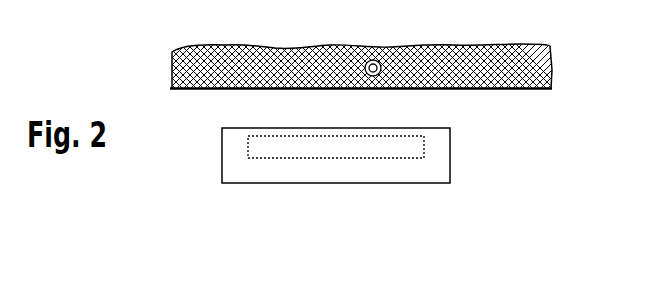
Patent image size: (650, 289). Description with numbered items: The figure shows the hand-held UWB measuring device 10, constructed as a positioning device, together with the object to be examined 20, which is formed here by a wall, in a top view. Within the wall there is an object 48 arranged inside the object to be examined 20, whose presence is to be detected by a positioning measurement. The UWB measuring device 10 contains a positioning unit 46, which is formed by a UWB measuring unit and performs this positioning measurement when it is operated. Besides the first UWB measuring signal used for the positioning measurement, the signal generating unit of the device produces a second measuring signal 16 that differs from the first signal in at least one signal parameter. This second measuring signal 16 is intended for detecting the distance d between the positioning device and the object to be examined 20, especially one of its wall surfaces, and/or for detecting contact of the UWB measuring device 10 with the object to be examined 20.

The UWB measuring device 10 is at (243, 185).
The second measuring signal 16 is at (317, 92).
The object to be examined 20 is at (552, 78).
The positioning unit 46 is at (391, 158).
The object 48 is at (373, 60).
The distance d is at (268, 90).